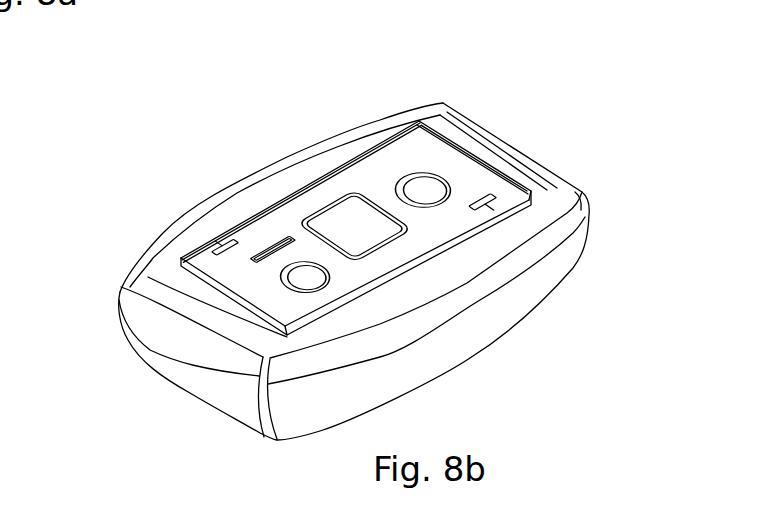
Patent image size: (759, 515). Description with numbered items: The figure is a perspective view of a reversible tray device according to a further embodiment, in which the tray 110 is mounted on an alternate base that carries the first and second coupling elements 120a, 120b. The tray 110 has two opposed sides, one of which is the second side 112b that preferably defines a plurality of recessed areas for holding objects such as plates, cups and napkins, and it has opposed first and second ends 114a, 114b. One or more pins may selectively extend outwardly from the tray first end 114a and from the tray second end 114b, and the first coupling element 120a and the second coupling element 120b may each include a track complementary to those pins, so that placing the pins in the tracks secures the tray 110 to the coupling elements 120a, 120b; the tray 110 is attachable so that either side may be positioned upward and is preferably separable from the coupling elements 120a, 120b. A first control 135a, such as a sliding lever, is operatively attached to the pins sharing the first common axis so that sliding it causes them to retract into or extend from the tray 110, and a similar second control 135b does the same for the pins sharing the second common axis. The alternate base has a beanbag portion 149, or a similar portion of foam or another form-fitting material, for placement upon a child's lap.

The tray 110 is at (366, 143).
The second side 112b is at (316, 195).
The first end 114a is at (458, 140).
The second end 114b is at (204, 277).
The first coupling element 120a is at (526, 181).
The second coupling element 120b is at (212, 304).
The first control 135a is at (483, 194).
The second control 135b is at (217, 249).
The beanbag portion 149 is at (502, 332).